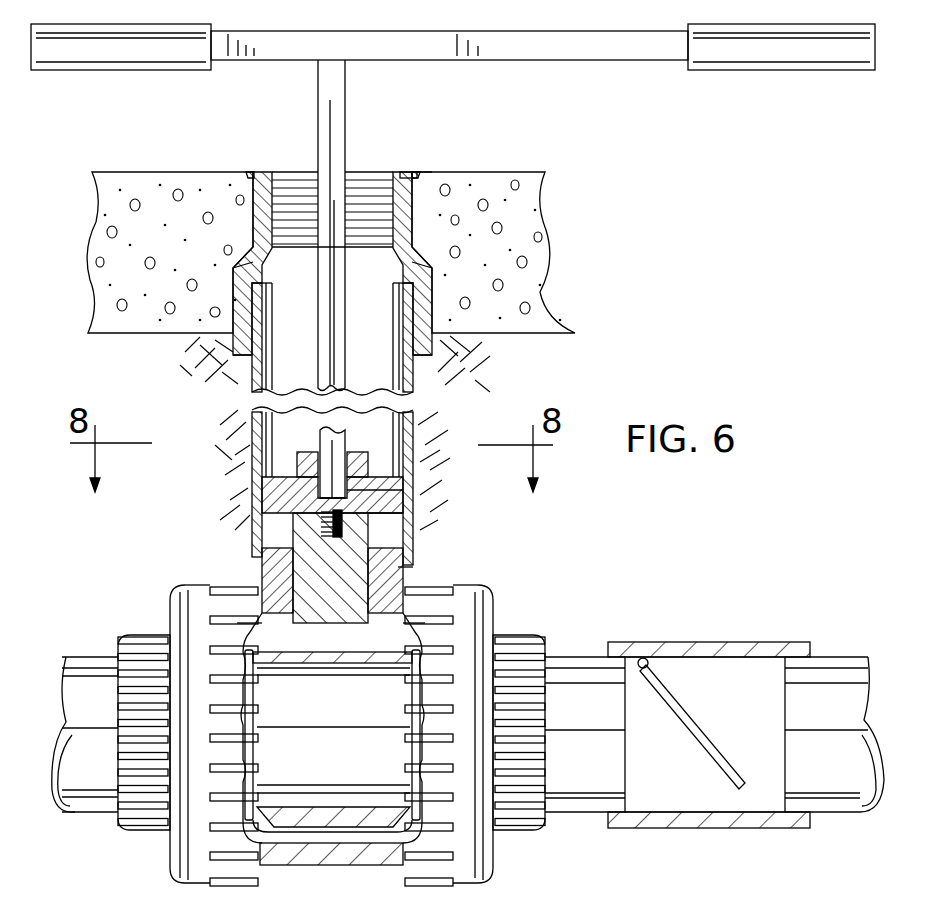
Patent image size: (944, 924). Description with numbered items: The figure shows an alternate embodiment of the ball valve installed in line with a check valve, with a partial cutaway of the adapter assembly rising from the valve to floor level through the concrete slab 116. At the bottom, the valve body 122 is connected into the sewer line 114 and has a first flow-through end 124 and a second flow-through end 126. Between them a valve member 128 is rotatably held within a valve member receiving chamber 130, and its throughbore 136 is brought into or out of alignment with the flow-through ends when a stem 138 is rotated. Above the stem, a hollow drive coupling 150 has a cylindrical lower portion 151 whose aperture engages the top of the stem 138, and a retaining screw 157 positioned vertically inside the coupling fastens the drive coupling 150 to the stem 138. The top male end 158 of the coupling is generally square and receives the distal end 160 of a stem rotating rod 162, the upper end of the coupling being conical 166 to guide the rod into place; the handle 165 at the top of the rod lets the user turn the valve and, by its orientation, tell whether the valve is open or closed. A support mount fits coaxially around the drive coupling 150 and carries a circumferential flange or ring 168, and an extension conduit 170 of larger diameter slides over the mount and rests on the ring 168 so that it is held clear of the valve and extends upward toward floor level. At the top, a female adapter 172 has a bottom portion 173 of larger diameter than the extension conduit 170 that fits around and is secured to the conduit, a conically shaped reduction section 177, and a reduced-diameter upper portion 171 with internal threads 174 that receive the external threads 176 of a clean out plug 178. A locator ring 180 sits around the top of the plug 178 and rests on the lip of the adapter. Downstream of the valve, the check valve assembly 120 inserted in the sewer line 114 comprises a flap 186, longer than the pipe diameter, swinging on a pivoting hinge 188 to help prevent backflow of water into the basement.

The sewer line 114 is at (95, 660).
The concrete slab 116 is at (533, 185).
The check valve assembly 120 is at (670, 630).
The valve body 122 is at (312, 857).
The first flow-through end 124 is at (248, 770).
The second flow-through end 126 is at (412, 767).
The valve member 128 is at (270, 657).
The valve member receiving chamber 130 is at (265, 633).
The throughbore 136 is at (398, 723).
The stem 138 is at (348, 575).
The hollow drive coupling 150 is at (405, 515).
The cylindrical lower portion 151 is at (377, 493).
The retaining screw 157 is at (358, 482).
The top male end 158 is at (328, 470).
The distal end 160 is at (258, 487).
The stem rotating rod 162 is at (343, 103).
The handle 165 is at (603, 47).
The conical upper end 166 is at (417, 414).
The circumferential flange or ring 168 is at (262, 566).
The extension conduit 170 is at (250, 373).
The upper portion 171 is at (415, 214).
The female adapter 172 is at (428, 256).
The bottom portion 173 is at (433, 317).
The internal threads 174 is at (290, 183).
The external threads 176 is at (368, 182).
The conically shaped reduction section 177 is at (222, 236).
The clean out plug 178 is at (298, 178).
The locator ring 180 is at (408, 178).
The flap 186 is at (703, 743).
The pivoting hinge 188 is at (648, 663).